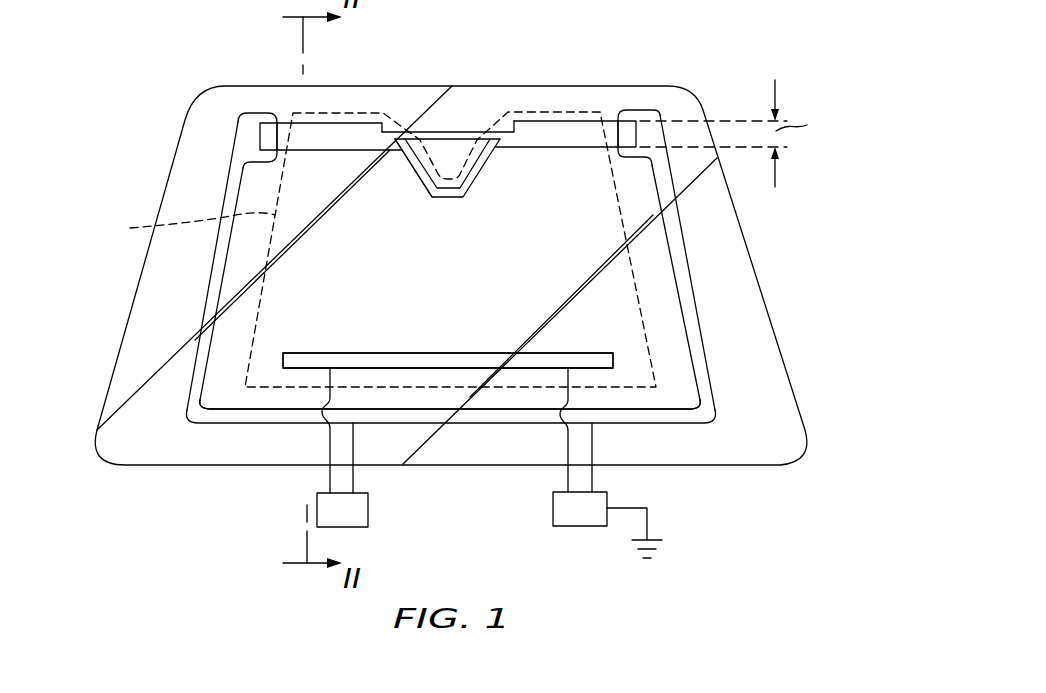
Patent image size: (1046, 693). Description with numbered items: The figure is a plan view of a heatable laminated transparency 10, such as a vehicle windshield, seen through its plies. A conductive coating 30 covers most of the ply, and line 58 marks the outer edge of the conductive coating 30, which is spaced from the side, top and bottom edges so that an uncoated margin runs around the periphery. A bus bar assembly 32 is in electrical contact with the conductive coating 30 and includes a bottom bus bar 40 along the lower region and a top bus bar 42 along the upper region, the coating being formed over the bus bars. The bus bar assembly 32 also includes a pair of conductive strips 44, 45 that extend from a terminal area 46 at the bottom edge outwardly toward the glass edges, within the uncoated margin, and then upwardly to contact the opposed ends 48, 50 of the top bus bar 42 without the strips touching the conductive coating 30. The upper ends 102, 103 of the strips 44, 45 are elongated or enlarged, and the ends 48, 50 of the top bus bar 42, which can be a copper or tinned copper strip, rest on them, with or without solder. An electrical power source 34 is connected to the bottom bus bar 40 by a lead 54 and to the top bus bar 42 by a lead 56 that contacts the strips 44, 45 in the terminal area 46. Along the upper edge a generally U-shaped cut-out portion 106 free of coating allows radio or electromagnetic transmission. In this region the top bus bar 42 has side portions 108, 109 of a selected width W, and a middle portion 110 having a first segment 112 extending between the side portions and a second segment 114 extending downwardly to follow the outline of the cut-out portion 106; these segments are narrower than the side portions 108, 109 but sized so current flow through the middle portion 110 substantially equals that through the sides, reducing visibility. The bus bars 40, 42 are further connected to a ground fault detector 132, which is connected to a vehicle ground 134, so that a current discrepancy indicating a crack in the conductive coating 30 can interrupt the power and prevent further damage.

The transparency 10 is at (130, 94).
The conductive coating 30 is at (571, 251).
The bus bar assembly 32 is at (183, 304).
The electrical power source 34 is at (370, 513).
The bottom bus bar 40 is at (320, 353).
The top bus bar 42 is at (358, 130).
The first conductive strip 44 is at (188, 380).
The second conductive strip 45 is at (688, 268).
The terminal area 46 is at (402, 353).
The first end of upper bus bar 48 is at (260, 141).
The second end of upper bus bar 50 is at (637, 134).
The lead 54 is at (328, 483).
The lead 56 is at (355, 482).
The outer edge of conductive coating 58 is at (186, 228).
The upper end of first conductive strip 102 is at (250, 118).
The upper end of second conductive strip 103 is at (647, 117).
The cut-out portion 106 is at (460, 153).
The first side portion of upper bus bar 108 is at (290, 128).
The second side portion of upper bus bar 109 is at (562, 127).
The middle portion of upper bus bar 110 is at (396, 180).
The first segment 112 is at (438, 128).
The second segment 114 is at (447, 200).
The ground fault detector 132 is at (582, 530).
The vehicle ground 134 is at (660, 548).